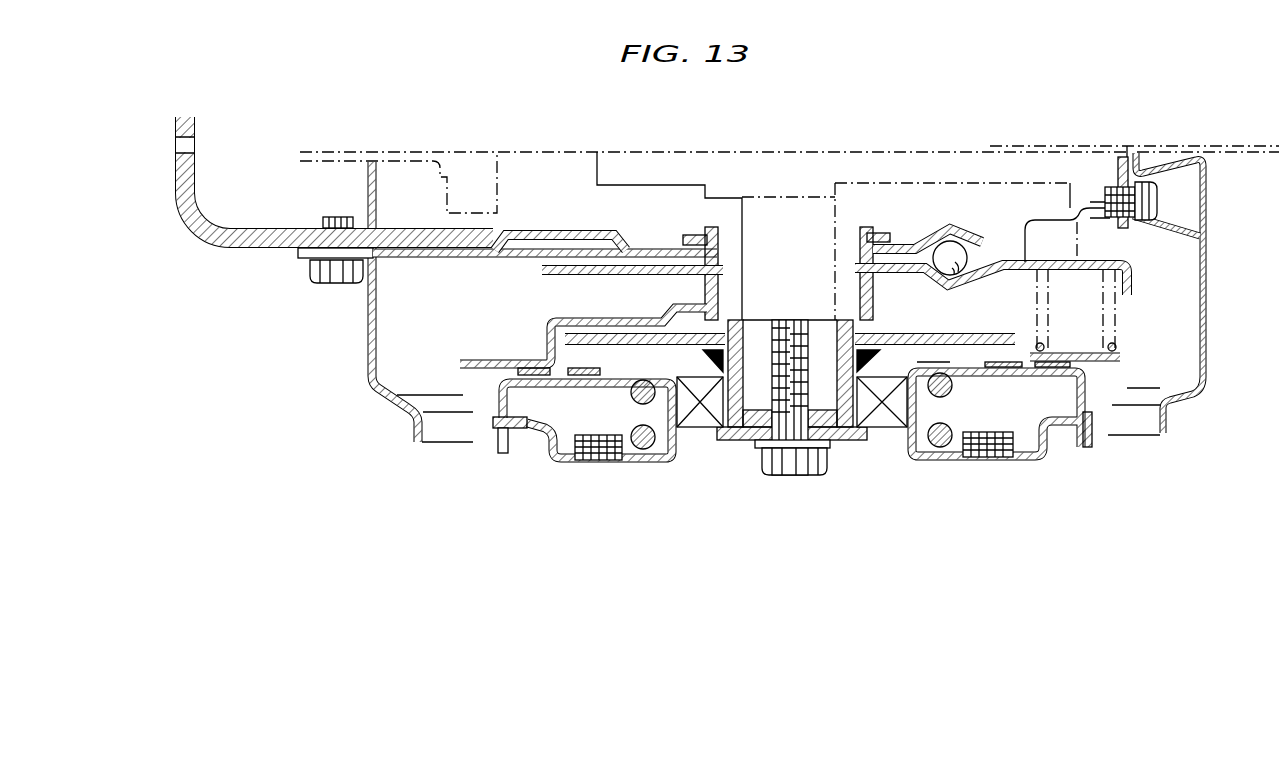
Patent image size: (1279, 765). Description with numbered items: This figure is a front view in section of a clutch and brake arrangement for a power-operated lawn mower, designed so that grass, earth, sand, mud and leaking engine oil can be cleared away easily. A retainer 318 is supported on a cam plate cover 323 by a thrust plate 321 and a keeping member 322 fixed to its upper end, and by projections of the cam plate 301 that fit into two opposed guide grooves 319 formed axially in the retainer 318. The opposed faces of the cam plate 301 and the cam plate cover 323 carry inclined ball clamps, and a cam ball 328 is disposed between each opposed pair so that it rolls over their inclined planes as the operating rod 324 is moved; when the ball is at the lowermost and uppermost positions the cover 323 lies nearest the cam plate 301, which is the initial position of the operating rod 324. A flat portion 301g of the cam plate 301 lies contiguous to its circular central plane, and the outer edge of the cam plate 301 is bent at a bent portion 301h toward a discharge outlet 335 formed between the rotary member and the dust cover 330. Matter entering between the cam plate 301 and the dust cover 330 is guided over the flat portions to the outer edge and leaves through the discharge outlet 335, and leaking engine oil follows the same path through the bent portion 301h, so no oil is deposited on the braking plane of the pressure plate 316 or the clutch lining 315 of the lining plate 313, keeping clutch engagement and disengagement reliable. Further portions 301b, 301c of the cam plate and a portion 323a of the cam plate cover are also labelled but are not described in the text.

The cam plate 301 is at (1015, 250).
The housing flange portion 301b is at (855, 266).
The inclined portion 301c is at (980, 262).
The flat portion 301g is at (1075, 319).
The bent portion 301h is at (1132, 283).
The lining plate 313 is at (1013, 364).
The clutch lining 315 is at (1008, 364).
The pressure plate 316 is at (602, 320).
The retainer 318 is at (875, 283).
The guide grooves 319 is at (718, 283).
The thrust plate 321 is at (670, 244).
The keeping member 322 is at (693, 234).
The cam plate cover 323 is at (622, 234).
The inclined portion of plate 323a is at (920, 238).
The operating rod 324 is at (257, 233).
The cam ball 328 is at (948, 243).
The dust cover 330 is at (1208, 300).
The discharge outlet 335 is at (1140, 424).